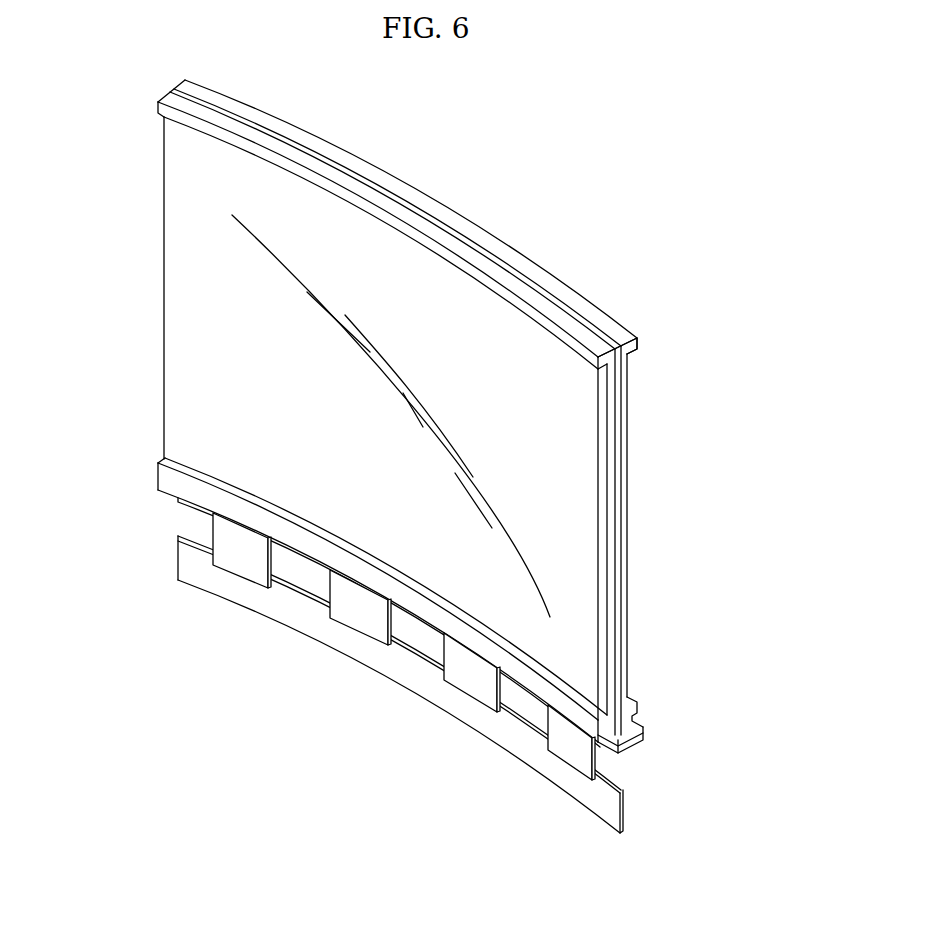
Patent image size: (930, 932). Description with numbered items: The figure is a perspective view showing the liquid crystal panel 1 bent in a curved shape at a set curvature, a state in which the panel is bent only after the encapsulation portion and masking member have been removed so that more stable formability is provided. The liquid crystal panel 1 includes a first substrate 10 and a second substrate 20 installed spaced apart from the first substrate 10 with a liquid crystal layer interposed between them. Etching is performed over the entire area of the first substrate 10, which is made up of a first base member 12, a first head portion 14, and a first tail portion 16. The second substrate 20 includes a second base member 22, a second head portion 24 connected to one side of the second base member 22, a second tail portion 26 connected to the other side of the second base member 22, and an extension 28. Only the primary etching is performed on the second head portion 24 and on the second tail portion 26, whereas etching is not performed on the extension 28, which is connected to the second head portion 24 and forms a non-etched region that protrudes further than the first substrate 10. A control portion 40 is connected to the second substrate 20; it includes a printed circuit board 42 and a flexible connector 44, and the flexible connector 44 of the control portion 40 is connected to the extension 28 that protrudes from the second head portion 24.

The liquid crystal panel 1 is at (425, 471).
The first substrate 10 is at (326, 411).
The first base member 12 is at (165, 256).
The first head portion 14 is at (165, 470).
The first tail portion 16 is at (177, 117).
The second substrate 20 is at (683, 543).
The second base member 22 is at (627, 492).
The second head portion 24 is at (637, 712).
The second tail portion 26 is at (637, 343).
The extension 28 is at (643, 735).
The control portion 40 is at (400, 680).
The printed circuit board 42 is at (402, 668).
The flexible connector 44 is at (360, 608).